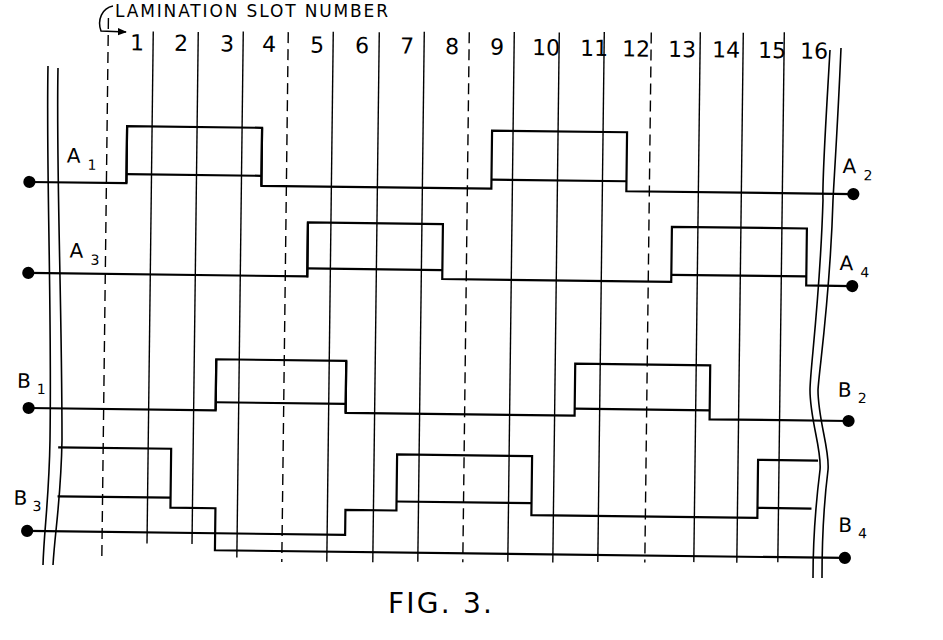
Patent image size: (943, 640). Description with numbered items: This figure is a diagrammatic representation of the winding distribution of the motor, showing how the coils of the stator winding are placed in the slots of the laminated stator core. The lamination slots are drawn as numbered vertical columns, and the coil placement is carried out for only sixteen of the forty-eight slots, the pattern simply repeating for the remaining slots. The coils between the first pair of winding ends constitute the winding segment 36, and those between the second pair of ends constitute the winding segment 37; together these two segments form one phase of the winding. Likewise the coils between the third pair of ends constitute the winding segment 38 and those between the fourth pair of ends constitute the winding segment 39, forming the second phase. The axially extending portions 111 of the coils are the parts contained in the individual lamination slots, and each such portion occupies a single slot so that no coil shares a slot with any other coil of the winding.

The winding segment 36 is at (249, 123).
The winding segment 37 is at (391, 216).
The winding segment 38 is at (305, 358).
The winding segment 39 is at (436, 447).
The axially extending portions 111 is at (124, 136).